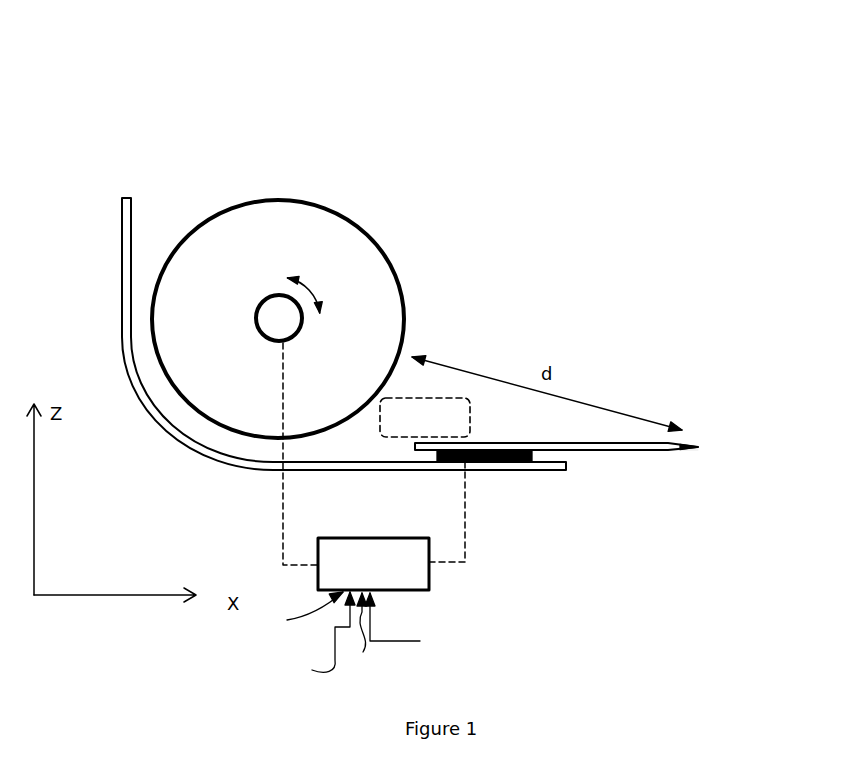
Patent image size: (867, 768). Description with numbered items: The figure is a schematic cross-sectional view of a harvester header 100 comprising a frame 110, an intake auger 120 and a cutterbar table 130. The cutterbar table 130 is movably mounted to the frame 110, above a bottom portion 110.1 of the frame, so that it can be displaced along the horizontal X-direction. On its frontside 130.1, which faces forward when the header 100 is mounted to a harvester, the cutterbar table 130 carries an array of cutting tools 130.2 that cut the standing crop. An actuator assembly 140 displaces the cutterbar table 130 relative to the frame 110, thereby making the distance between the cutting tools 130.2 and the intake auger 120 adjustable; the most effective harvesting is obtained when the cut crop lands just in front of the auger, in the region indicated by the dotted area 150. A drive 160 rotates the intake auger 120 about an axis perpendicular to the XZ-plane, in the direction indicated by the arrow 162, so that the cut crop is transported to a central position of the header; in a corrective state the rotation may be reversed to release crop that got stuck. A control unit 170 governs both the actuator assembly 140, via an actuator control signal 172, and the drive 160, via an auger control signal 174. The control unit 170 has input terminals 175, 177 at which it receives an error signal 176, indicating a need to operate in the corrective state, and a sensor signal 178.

The header 100 is at (155, 137).
The frame 110 is at (331, 360).
The bottom portion of the frame 110.1 is at (410, 463).
The intake auger 120 is at (330, 243).
The cutterbar table 130 is at (618, 445).
The frontside 130.1 is at (678, 467).
The cutting tools 130.2 is at (693, 443).
The actuator assembly 140 is at (505, 463).
The dotted area 150 is at (470, 413).
The drive 160 is at (293, 325).
The arrow 162 is at (313, 290).
The control unit 170 is at (378, 580).
The actuator control signal 172 is at (465, 562).
The auger control signal 174 is at (283, 565).
The input terminal 175 is at (295, 612).
The error signal 176 is at (308, 636).
The input terminal 177 is at (364, 634).
The sensor signal 178 is at (412, 624).